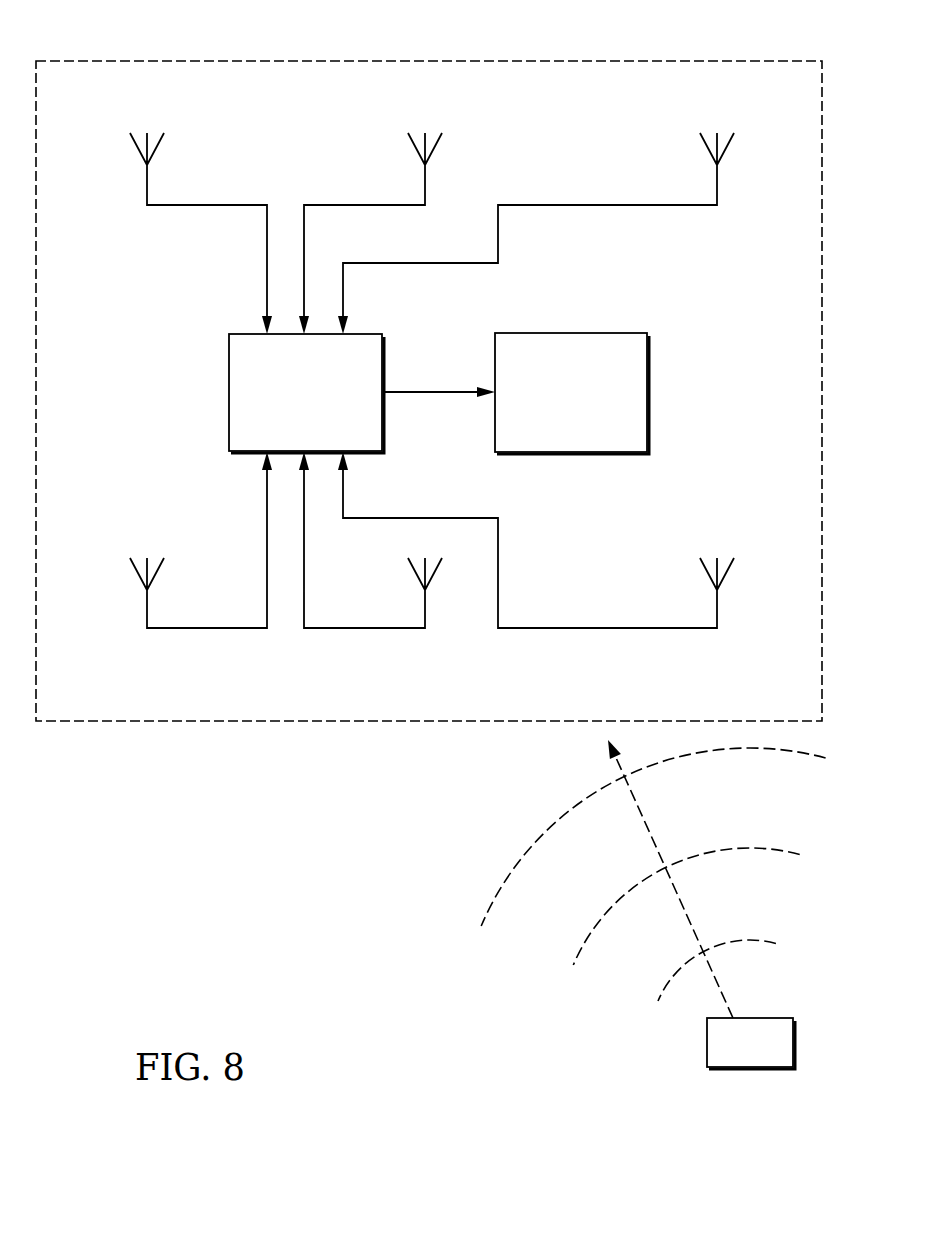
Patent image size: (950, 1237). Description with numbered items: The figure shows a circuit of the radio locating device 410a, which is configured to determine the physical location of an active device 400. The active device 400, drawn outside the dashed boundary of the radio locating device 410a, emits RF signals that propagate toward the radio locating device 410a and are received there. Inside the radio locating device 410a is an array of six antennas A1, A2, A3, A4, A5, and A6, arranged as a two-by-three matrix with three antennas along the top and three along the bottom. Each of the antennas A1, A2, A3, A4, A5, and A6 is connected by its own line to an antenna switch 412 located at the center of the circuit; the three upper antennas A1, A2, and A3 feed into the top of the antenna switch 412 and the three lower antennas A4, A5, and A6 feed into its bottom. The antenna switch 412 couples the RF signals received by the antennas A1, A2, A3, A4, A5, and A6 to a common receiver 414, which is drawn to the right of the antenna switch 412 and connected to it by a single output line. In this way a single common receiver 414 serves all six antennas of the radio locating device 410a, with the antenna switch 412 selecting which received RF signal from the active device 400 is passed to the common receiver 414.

The radio locating device 410a is at (748, 61).
The antenna switch 412 is at (229, 394).
The common receiver 414 is at (647, 390).
The active device 400 is at (771, 1053).
The antenna A1 is at (201, 233).
The antenna A2 is at (370, 233).
The antenna A3 is at (536, 233).
The antenna A4 is at (201, 540).
The antenna A5 is at (370, 540).
The antenna A6 is at (536, 540).